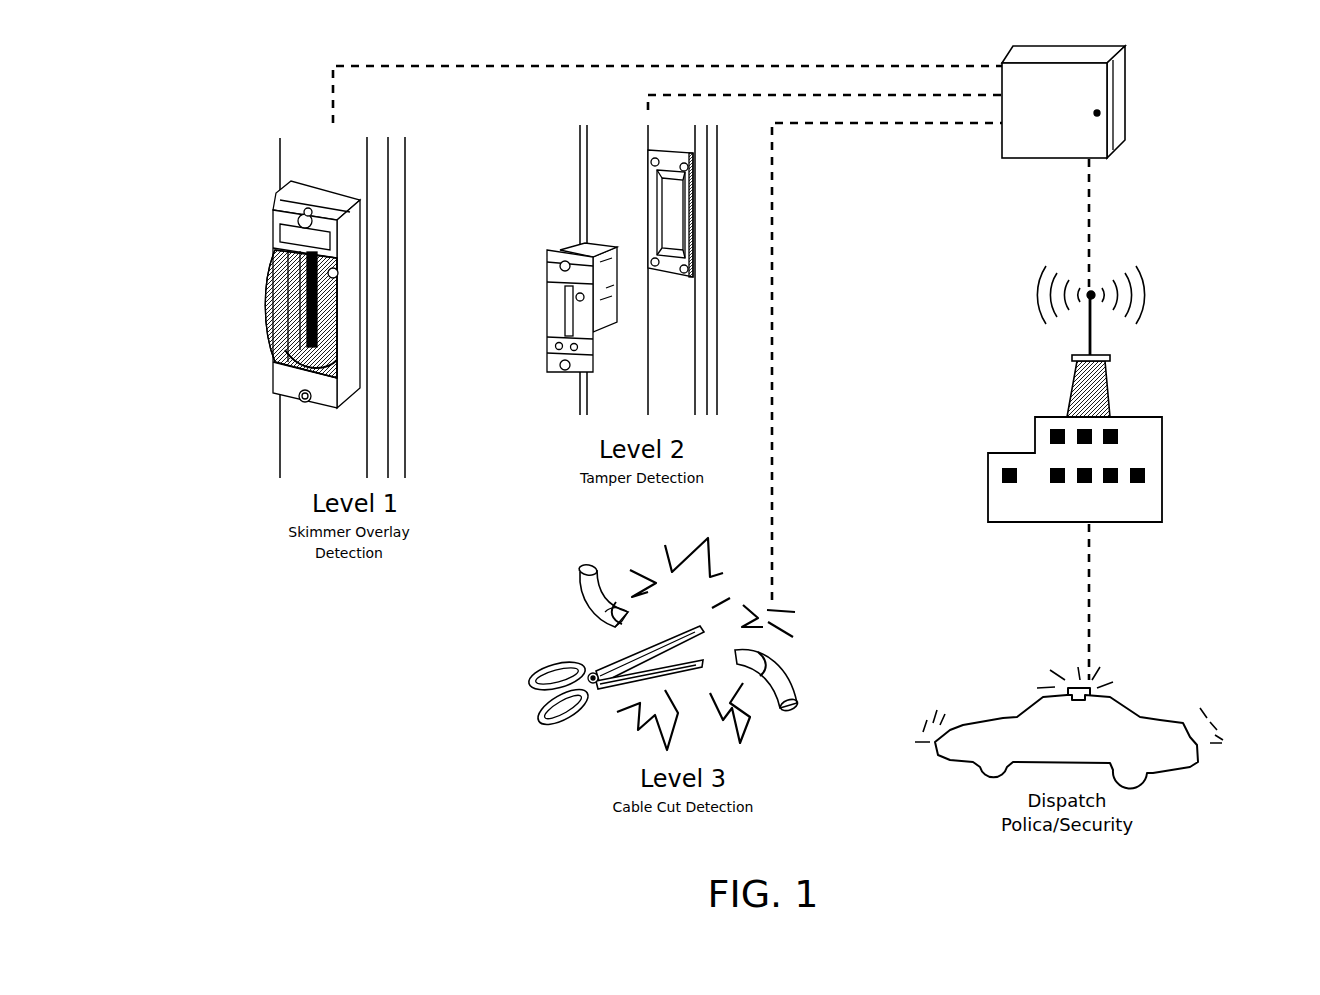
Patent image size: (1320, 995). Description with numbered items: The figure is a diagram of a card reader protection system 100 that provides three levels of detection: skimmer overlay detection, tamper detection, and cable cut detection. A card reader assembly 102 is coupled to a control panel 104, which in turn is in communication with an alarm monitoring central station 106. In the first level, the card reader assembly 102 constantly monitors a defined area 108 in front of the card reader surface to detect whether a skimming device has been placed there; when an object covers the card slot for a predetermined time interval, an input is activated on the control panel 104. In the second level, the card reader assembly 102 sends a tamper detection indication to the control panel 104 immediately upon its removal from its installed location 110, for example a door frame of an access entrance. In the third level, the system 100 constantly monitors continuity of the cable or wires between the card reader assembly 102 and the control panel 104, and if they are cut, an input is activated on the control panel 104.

The card reader protection system 100 is at (1228, 199).
The card reader assembly 102 is at (268, 218).
The control panel 104 is at (1091, 95).
The alarm monitoring central station 106 is at (1143, 452).
The defined area 108 is at (330, 330).
The installed location 110 is at (680, 143).